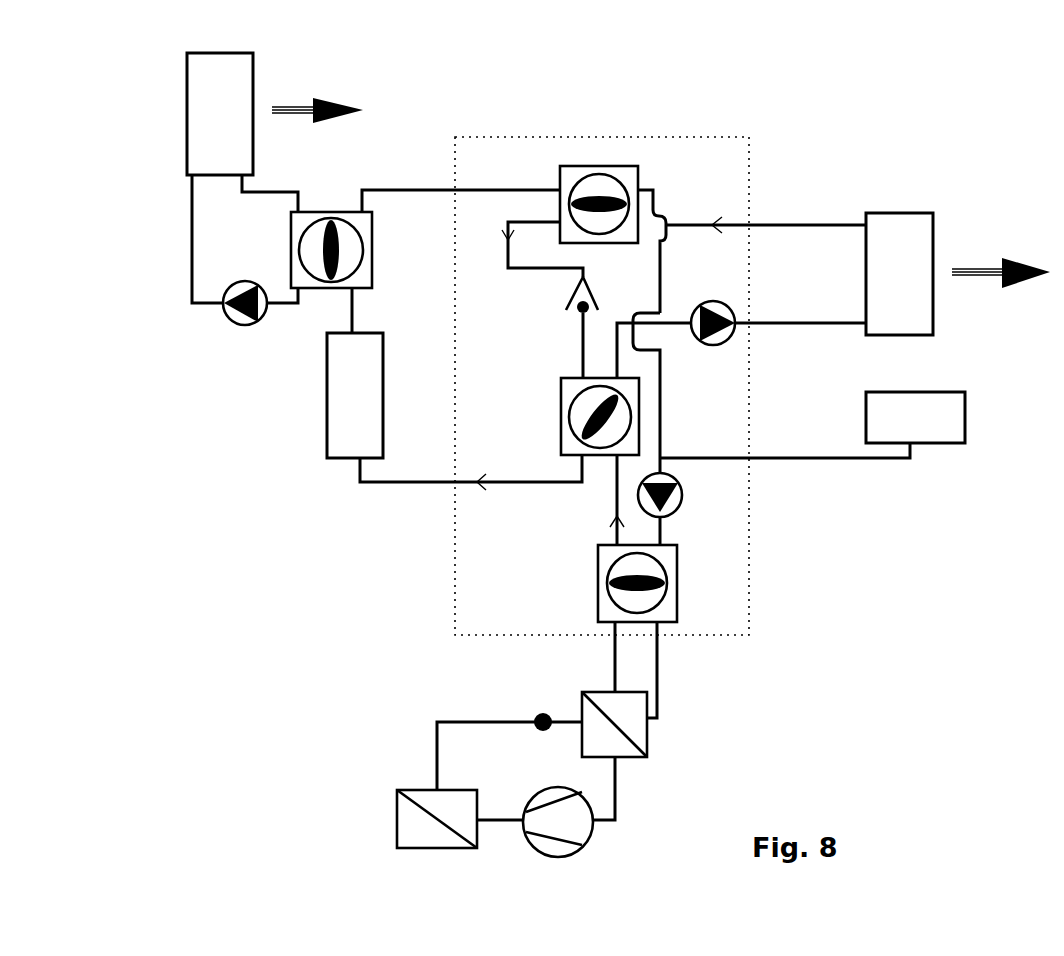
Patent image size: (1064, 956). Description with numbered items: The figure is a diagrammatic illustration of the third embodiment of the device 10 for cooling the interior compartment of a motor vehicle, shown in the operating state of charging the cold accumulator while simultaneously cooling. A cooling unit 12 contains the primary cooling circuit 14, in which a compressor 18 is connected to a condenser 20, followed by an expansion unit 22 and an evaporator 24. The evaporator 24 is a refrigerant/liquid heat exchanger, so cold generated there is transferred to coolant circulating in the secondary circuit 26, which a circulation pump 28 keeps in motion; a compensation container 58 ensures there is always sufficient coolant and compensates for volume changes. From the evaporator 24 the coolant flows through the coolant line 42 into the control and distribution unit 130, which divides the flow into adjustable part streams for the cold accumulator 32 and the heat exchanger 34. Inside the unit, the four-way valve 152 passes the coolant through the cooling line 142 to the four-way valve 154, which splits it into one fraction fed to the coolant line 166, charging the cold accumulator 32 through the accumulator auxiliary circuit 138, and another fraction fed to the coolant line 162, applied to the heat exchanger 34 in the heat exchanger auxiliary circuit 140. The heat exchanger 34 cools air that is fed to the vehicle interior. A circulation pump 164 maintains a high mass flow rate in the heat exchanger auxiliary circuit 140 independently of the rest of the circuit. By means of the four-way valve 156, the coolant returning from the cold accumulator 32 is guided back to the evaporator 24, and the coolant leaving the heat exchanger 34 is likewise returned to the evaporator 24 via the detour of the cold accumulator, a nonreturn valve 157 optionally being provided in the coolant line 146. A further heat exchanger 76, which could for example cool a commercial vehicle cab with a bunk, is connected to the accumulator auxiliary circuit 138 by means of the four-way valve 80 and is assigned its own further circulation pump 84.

The device 10 is at (328, 600).
The cooling unit 12 is at (632, 802).
The primary cooling circuit 14 is at (467, 720).
The compressor 18 is at (578, 832).
The condenser 20 is at (413, 832).
The expansion unit 22 is at (540, 713).
The evaporator 24 is at (635, 717).
The secondary circuit 26 is at (746, 92).
The circulation pump 28 is at (683, 503).
The cold accumulator 32 is at (342, 388).
The heat exchanger 34 is at (895, 257).
The coolant line 42 is at (613, 673).
The compensation container 58 is at (950, 420).
The further heat exchanger 76 is at (203, 119).
The four-way valve 80 is at (330, 212).
The further circulation pump 84 is at (245, 318).
The control and distribution unit 130 is at (498, 137).
The accumulator auxiliary circuit 138 is at (392, 190).
The heat exchanger auxiliary circuit 140 is at (753, 225).
The cooling line 142 is at (610, 497).
The coolant line 146 is at (507, 260).
The four-way valve 152 is at (678, 568).
The four-way valve 154 is at (561, 427).
The four-way valve 156 is at (590, 166).
The nonreturn valve 157 is at (573, 297).
The coolant line 162 is at (662, 330).
The circulation pump 164 is at (705, 305).
The coolant line 166 is at (407, 482).